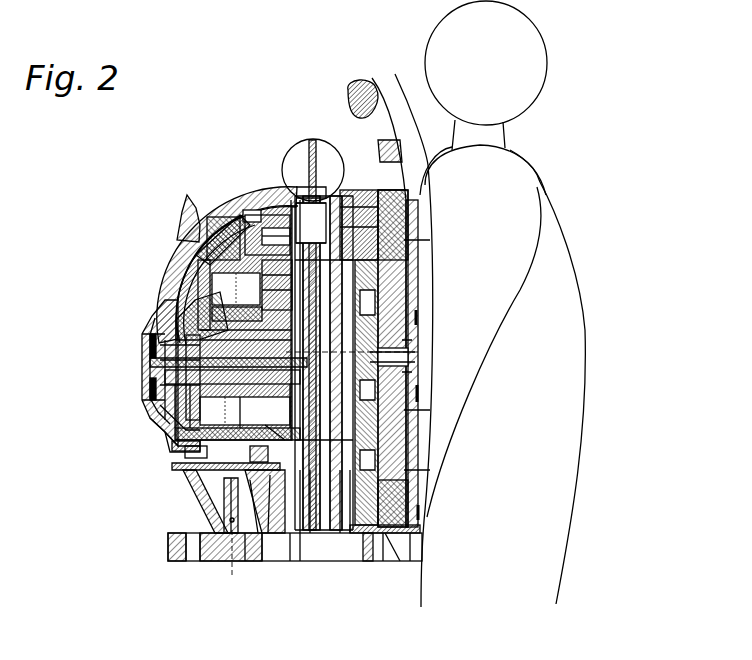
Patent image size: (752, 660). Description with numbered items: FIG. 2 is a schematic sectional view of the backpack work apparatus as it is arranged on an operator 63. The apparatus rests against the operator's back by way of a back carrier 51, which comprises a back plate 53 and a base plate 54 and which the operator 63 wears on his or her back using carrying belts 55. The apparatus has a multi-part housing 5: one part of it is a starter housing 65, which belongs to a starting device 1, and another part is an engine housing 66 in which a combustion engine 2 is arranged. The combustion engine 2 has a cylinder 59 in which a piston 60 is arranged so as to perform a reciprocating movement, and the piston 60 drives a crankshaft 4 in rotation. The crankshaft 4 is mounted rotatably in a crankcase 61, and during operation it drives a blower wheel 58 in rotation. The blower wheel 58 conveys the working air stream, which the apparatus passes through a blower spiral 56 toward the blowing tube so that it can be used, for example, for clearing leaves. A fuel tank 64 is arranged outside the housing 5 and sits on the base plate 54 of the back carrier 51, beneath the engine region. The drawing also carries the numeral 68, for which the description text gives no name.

The starting device 1 is at (143, 382).
The combustion engine 2 is at (172, 260).
The crankshaft 4 is at (166, 420).
The housing 5 is at (246, 190).
The back carrier 51 is at (392, 85).
The back plate 53 is at (417, 350).
The base plate 54 is at (197, 556).
The carrying belts 55 is at (534, 252).
The blower spiral 56 is at (303, 145).
The blower wheel 58 is at (318, 545).
The cylinder 59 is at (232, 213).
The piston 60 is at (168, 296).
The crankcase 61 is at (177, 447).
The operator 63 is at (545, 466).
The fuel tank 64 is at (196, 500).
The starter housing 65 is at (147, 405).
The engine housing 66 is at (186, 238).
The switch 68 is at (152, 333).